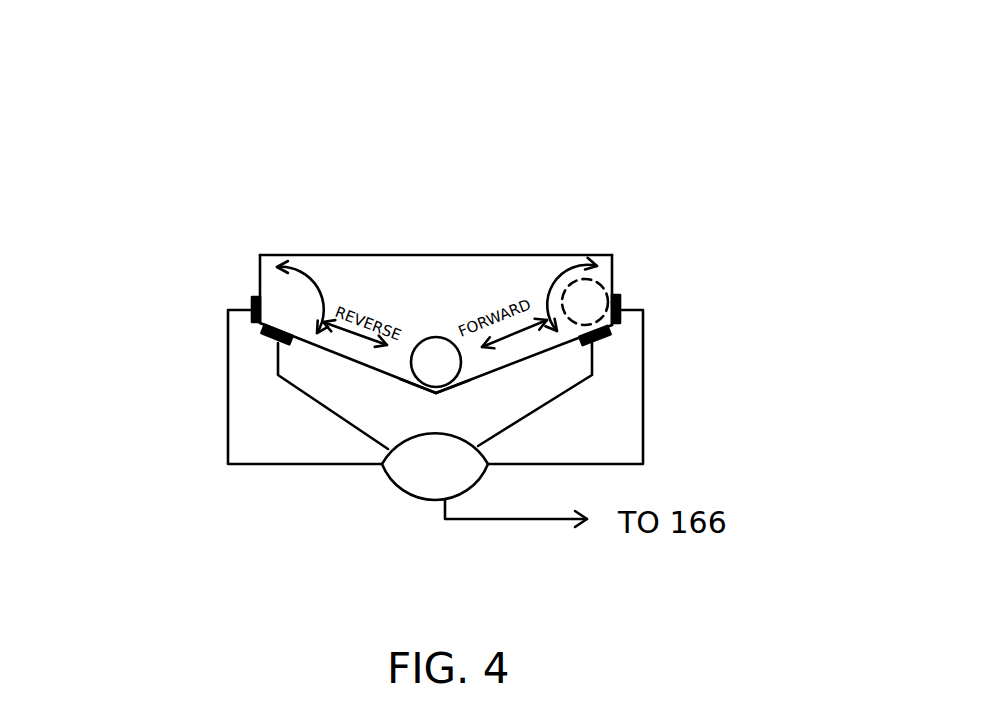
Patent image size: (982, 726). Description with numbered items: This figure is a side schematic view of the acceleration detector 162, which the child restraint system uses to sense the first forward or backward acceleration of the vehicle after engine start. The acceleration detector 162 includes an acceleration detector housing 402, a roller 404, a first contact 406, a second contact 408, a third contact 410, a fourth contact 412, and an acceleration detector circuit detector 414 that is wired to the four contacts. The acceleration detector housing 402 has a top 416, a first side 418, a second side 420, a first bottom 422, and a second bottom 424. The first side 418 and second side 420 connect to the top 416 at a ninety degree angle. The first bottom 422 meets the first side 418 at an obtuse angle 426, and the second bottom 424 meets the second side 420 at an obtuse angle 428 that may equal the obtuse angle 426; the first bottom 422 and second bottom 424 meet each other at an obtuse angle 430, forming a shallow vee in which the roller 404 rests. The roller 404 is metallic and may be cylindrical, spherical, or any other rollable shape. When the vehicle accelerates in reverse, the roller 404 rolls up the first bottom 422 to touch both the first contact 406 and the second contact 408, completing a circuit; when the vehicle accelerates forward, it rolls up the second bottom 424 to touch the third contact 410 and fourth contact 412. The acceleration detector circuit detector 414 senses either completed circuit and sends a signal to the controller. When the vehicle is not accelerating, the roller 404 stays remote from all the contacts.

The acceleration detector 162 is at (728, 148).
The acceleration detector housing 402 is at (443, 308).
The roller 404 is at (440, 340).
The first contact 406 is at (252, 298).
The second contact 408 is at (275, 338).
The third contact 410 is at (620, 298).
The fourth contact 412 is at (603, 330).
The acceleration detector circuit detector 414 is at (417, 500).
The top 416 is at (407, 255).
The first side 418 is at (260, 266).
The second side 420 is at (613, 267).
The first bottom 422 is at (348, 360).
The second bottom 424 is at (540, 353).
The obtuse angle 426 is at (305, 270).
The obtuse angle 428 is at (575, 262).
The obtuse angle 430 is at (508, 374).